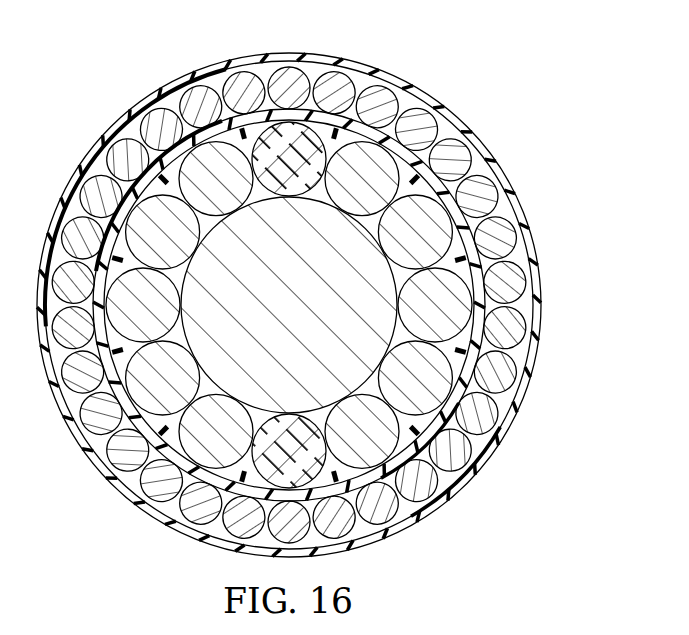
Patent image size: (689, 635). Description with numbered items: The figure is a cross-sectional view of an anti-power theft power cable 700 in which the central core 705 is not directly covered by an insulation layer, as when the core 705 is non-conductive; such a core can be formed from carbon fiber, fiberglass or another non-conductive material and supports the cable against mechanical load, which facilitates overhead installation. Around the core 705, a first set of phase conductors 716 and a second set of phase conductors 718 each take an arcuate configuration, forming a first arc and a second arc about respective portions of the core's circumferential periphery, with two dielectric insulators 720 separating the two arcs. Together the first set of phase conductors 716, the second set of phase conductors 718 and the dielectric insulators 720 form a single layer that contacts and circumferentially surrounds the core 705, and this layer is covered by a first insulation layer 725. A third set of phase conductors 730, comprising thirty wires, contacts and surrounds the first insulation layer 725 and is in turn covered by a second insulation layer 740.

The power cable 700 is at (88, 84).
The core 705 is at (267, 320).
The first set of phase conductors 716 is at (141, 247).
The second set of phase conductors 718 is at (393, 247).
The dielectric insulators 720 is at (267, 174).
The first insulation layer 725 is at (186, 98).
The third set of phase conductors 730 is at (418, 117).
The second insulation layer 740 is at (358, 69).